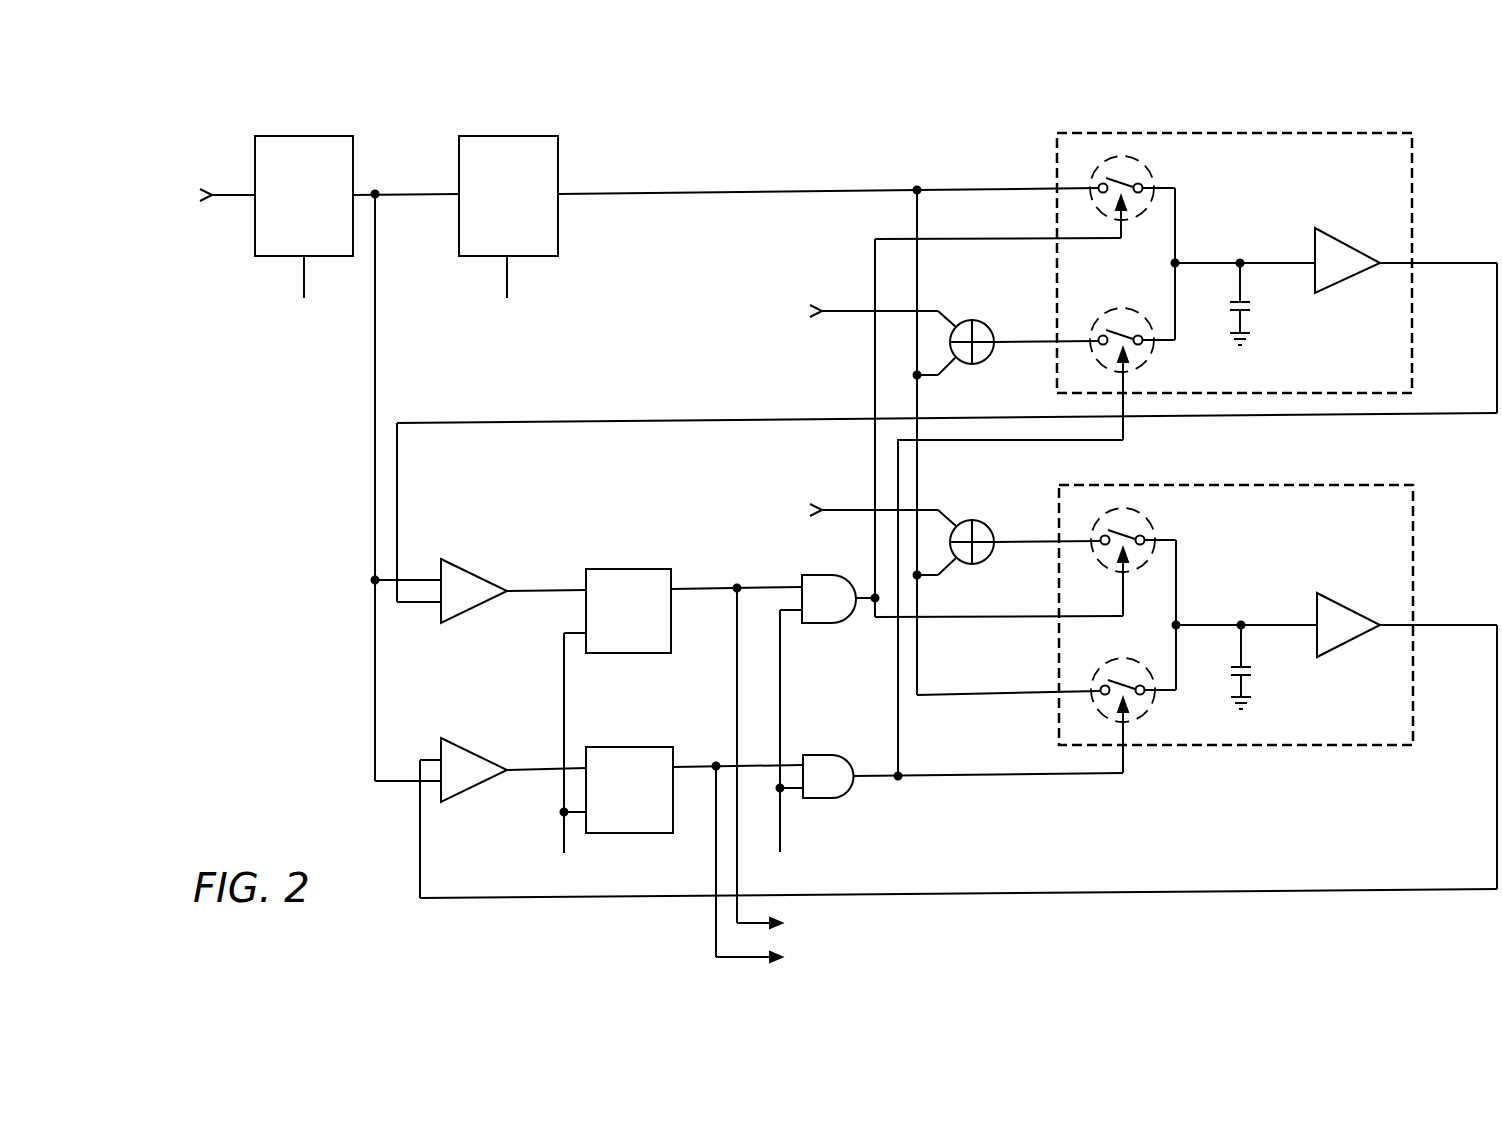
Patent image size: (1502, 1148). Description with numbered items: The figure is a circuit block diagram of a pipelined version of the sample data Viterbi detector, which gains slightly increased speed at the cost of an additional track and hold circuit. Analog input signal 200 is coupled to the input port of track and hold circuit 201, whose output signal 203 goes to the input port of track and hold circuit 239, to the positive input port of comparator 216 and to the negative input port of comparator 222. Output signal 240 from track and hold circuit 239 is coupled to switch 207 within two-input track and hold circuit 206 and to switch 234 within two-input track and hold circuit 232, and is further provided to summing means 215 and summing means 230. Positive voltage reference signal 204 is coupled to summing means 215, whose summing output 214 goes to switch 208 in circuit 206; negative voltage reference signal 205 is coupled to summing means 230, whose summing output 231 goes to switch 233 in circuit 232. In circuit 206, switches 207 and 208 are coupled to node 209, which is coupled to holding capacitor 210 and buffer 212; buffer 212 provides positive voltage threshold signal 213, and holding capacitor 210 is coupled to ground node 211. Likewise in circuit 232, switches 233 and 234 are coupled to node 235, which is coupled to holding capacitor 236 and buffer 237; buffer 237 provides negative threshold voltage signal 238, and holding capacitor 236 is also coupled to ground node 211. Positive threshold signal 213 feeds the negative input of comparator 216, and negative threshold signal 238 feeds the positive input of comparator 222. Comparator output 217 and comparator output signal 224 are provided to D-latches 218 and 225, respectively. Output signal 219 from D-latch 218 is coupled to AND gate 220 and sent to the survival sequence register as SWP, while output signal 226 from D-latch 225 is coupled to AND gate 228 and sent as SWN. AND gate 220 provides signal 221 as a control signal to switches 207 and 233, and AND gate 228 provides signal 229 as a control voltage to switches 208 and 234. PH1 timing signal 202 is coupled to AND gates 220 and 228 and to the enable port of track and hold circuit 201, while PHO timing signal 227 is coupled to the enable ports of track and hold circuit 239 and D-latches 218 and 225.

The analog input signal 200 is at (228, 206).
The track and hold circuit 201 is at (255, 163).
The PH1 timing signal 202 is at (300, 270).
The output signal 203 is at (375, 490).
The positive voltage reference signal 204 is at (840, 311).
The negative voltage reference signal 205 is at (840, 510).
The two-input track and hold circuit 206 is at (1412, 180).
The switch 207 is at (1150, 182).
The switch 208 is at (1150, 355).
The node 209 is at (1170, 264).
The holding capacitor 210 is at (1255, 305).
The ground node 211 is at (1255, 338).
The buffer 212 is at (1350, 283).
The positive voltage threshold signal 213 is at (1447, 265).
The summing output 214 is at (1000, 345).
The summing means 215 is at (985, 325).
The comparator 216 is at (473, 612).
The comparator output 217 is at (550, 588).
The D-latch 218 is at (630, 654).
The output signal 219 is at (736, 585).
The AND gate 220 is at (825, 623).
The signal 221 is at (874, 375).
The comparator 222 is at (473, 790).
The comparator output signal 224 is at (540, 765).
The D-latch 225 is at (632, 834).
The output signal 226 is at (716, 762).
The PHO timing signal 227 is at (507, 270).
The AND gate 228 is at (830, 800).
The signal 229 is at (898, 780).
The summing means 230 is at (985, 525).
The summing output 231 is at (1000, 545).
The two-input track and hold circuit 232 is at (1413, 533).
The switch 233 is at (1152, 535).
The switch 234 is at (1152, 705).
The node 235 is at (1170, 627).
The holding capacitor 236 is at (1255, 670).
The buffer 237 is at (1350, 645).
The negative threshold voltage signal 238 is at (1448, 627).
The track and hold circuit 239 is at (459, 163).
The output signal 240 is at (650, 190).